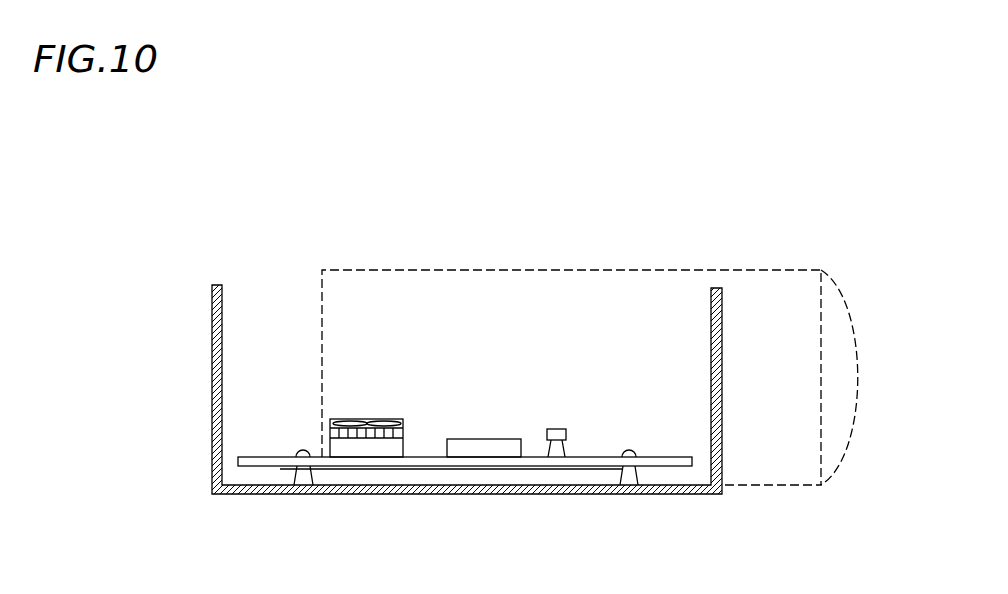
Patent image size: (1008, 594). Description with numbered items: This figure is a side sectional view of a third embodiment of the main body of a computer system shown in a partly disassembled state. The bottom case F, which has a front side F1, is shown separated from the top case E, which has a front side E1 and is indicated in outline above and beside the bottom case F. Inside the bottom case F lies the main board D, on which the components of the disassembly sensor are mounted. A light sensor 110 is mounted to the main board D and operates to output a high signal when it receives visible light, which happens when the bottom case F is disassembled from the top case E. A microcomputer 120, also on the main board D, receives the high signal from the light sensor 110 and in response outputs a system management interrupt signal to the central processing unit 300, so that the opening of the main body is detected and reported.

The light sensor 110 is at (558, 429).
The microcomputer 120 is at (495, 439).
The central processing unit 300 is at (400, 442).
The main board D is at (456, 469).
The top case E is at (575, 270).
The front side of the top case E1 is at (822, 315).
The bottom case F is at (212, 443).
The front side of the bottom case F1 is at (718, 293).